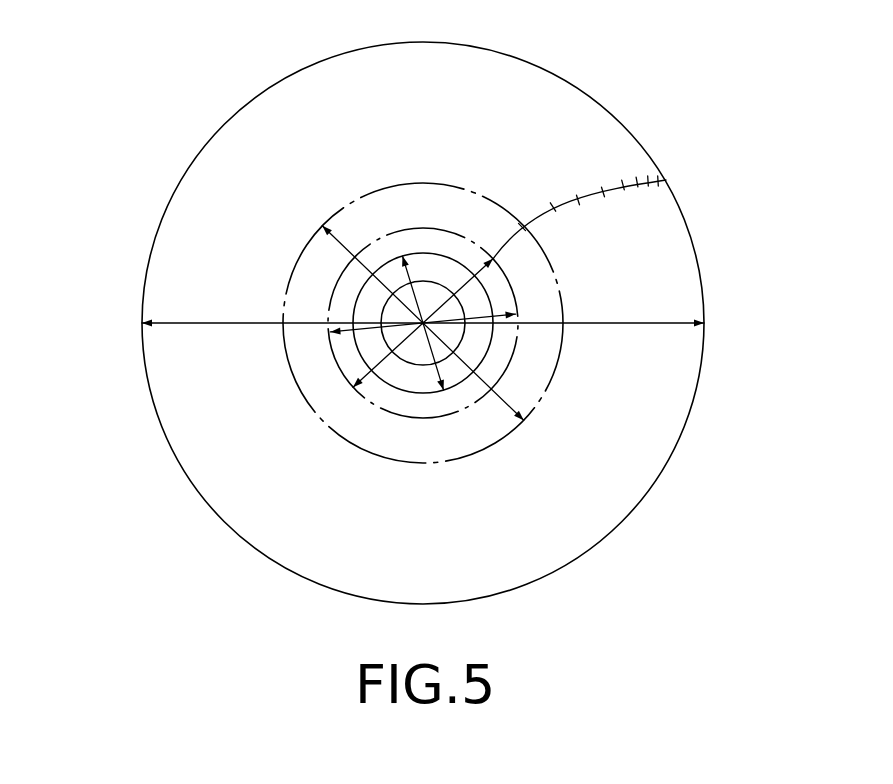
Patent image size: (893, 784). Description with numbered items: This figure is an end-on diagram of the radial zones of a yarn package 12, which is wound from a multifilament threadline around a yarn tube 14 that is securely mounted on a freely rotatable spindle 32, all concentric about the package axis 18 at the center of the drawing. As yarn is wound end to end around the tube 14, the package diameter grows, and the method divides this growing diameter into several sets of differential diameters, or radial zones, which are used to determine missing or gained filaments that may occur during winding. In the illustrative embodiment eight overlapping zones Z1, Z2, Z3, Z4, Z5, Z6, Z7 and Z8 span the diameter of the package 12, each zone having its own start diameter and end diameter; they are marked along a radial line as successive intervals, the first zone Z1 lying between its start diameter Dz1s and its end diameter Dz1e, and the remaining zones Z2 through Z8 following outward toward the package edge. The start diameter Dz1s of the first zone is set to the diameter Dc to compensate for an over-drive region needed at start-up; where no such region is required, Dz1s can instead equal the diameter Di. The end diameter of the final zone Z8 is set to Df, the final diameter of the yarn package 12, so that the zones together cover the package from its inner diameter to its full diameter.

The yarn package 12 is at (620, 506).
The yarn tube 14 is at (368, 297).
The axis 18 is at (417, 325).
The spindle 32 is at (393, 315).
The final diameter Df is at (672, 323).
The over-drive compensation diameter Dc is at (340, 331).
The initial diameter Di is at (445, 372).
The start diameter of the first zone Dz1s is at (373, 369).
The end diameter of the first zone Dz1e is at (512, 410).
The first radial zone Z1 is at (508, 243).
The second radial zone Z2 is at (547, 203).
The third radial zone Z3 is at (576, 196).
The fourth radial zone Z4 is at (594, 194).
The fifth radial zone Z5 is at (618, 186).
The sixth radial zone Z6 is at (631, 182).
The seventh radial zone Z7 is at (643, 184).
The eighth radial zone Z8 is at (655, 183).